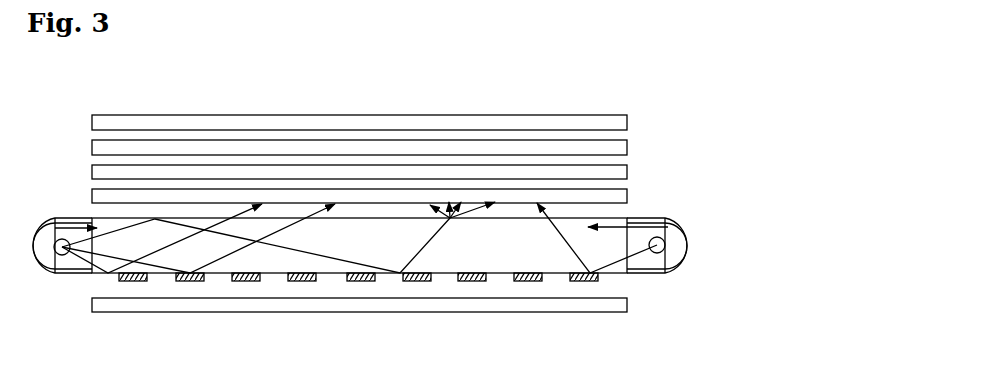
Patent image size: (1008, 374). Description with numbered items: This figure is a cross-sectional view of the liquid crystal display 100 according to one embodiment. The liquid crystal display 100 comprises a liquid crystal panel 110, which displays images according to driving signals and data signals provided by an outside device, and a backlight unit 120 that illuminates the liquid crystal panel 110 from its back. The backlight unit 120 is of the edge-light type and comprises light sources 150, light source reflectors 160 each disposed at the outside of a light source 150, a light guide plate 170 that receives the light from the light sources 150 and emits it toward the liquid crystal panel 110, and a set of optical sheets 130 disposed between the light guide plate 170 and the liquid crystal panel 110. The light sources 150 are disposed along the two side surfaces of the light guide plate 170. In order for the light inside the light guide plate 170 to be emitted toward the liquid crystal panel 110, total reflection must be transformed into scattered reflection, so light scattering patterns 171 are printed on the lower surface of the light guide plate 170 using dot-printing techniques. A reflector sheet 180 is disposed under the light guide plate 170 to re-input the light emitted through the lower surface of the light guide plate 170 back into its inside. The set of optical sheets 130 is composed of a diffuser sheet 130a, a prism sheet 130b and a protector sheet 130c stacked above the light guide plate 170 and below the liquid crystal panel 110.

The liquid crystal display 100 is at (378, 88).
The liquid crystal panel 110 is at (620, 115).
The backlight unit 120 is at (817, 308).
The set of optical sheets 130 is at (757, 203).
The diffuser sheet 130a is at (623, 193).
The prism sheet 130b is at (623, 170).
The protector sheet 130c is at (623, 142).
The light source 150 is at (62, 255).
The light source reflector 160 is at (50, 220).
The light guide plate 170 is at (618, 274).
The light scattering pattern 171 is at (128, 282).
The reflector sheet 180 is at (253, 313).